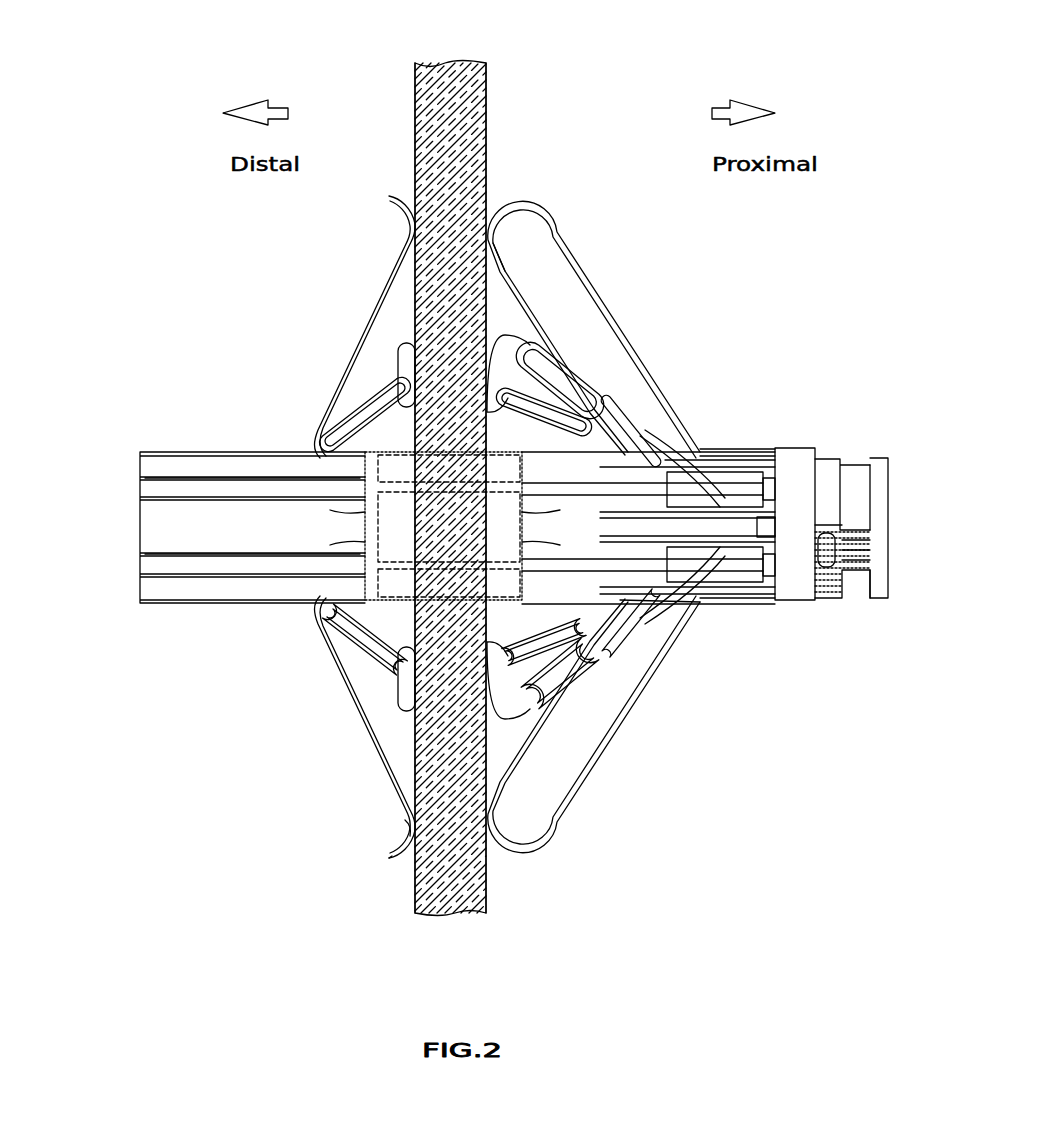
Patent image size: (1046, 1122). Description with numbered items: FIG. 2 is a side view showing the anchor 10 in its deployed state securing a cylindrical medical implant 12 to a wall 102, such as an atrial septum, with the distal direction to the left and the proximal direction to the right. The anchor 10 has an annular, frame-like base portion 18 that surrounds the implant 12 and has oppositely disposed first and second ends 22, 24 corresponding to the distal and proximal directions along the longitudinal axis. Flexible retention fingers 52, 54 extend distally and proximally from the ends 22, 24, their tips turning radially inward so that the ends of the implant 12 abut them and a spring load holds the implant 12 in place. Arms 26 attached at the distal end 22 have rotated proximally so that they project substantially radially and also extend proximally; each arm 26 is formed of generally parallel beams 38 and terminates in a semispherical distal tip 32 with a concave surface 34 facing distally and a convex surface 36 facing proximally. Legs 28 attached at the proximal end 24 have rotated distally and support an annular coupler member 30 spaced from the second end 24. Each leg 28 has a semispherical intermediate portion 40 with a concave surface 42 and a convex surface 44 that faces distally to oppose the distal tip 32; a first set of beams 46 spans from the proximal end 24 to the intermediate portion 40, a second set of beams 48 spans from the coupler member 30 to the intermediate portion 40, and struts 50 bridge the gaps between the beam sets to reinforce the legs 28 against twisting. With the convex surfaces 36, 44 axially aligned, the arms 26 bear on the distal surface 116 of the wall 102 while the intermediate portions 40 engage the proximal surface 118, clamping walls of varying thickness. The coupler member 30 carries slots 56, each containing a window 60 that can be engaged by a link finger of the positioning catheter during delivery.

The anchor 10 is at (866, 441).
The medical implant 12 is at (150, 522).
The base portion 18 is at (373, 468).
The first end 22 is at (365, 522).
The second end 24 is at (555, 528).
The arms 26 is at (352, 722).
The legs 28 is at (590, 777).
The coupler member 30 is at (795, 448).
The distal tip 32 is at (395, 855).
The concave surface 34 is at (405, 823).
The convex surface 36 is at (403, 697).
The beams 38 is at (332, 677).
The intermediate portion 40 is at (542, 222).
The concave surface 42 is at (505, 220).
The convex surface 44 is at (530, 205).
The beams 46 is at (523, 757).
The beams 48 is at (613, 730).
The struts 50 is at (613, 625).
The retention finger 52 is at (253, 495).
The retention finger 54 is at (717, 497).
The slots 56 is at (872, 558).
The window 60 is at (828, 548).
The wall 102 is at (451, 60).
The distal surface 116 is at (415, 117).
The proximal surface 118 is at (486, 117).